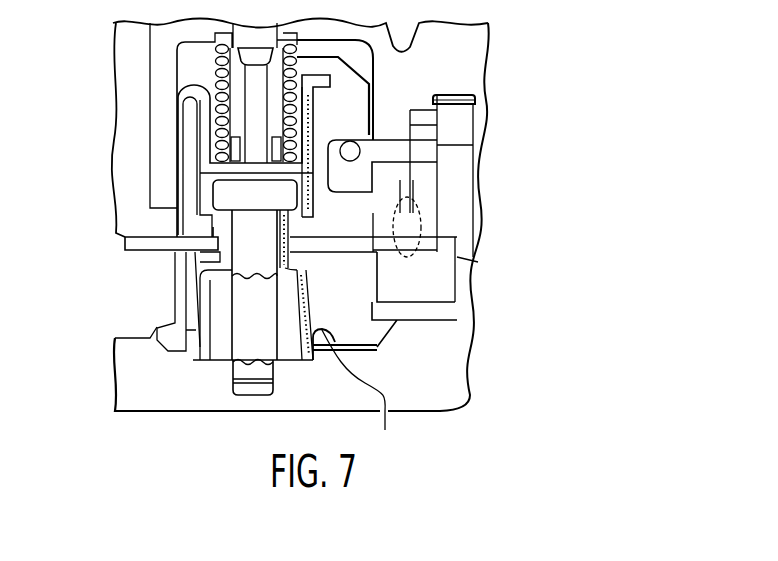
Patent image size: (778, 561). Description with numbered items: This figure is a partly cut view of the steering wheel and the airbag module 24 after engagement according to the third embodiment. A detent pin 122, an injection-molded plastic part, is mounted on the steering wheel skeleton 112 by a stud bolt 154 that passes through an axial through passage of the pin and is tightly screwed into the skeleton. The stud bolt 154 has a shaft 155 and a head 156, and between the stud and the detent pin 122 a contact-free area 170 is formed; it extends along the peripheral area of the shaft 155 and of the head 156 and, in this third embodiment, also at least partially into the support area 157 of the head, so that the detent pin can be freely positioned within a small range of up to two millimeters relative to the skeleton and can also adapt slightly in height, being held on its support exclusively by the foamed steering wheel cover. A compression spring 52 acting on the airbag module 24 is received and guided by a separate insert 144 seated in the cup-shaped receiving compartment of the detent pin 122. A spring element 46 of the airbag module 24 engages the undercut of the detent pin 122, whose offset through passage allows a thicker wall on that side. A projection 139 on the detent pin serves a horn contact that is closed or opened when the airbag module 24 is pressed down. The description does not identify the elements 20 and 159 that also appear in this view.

The airbag module 24 is at (435, 47).
The compression spring 52 is at (380, 82).
The cap 159 is at (478, 100).
The insert 144 is at (312, 117).
The projection 139 is at (473, 160).
The spring element 46 is at (397, 165).
The stud bolt 154 is at (460, 257).
The lower housing 20 is at (443, 282).
The detent pin 122 is at (343, 305).
The steering wheel skeleton 112 is at (358, 357).
The head 156 is at (205, 186).
The support area 157 is at (197, 218).
The shaft 155 is at (205, 300).
The contact-free area 170 is at (401, 432).